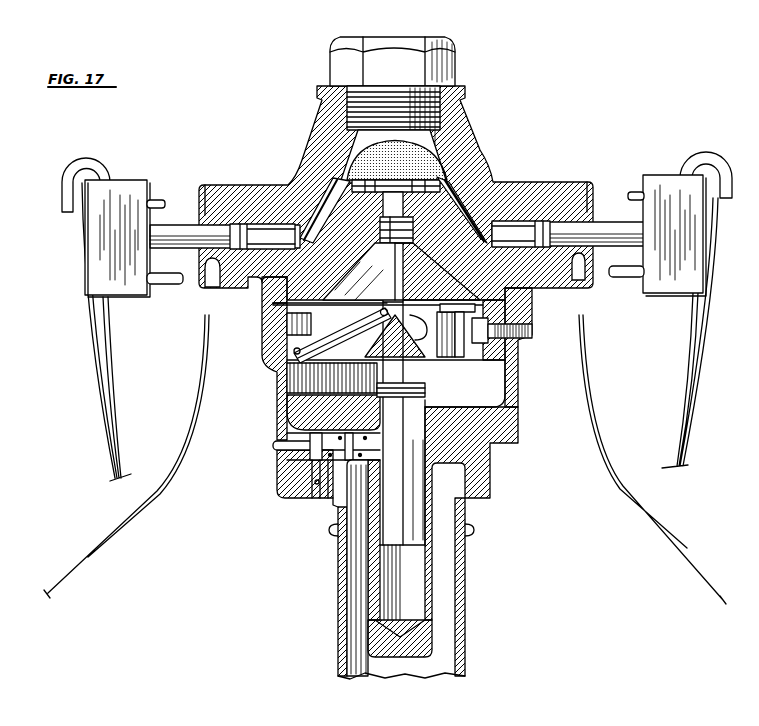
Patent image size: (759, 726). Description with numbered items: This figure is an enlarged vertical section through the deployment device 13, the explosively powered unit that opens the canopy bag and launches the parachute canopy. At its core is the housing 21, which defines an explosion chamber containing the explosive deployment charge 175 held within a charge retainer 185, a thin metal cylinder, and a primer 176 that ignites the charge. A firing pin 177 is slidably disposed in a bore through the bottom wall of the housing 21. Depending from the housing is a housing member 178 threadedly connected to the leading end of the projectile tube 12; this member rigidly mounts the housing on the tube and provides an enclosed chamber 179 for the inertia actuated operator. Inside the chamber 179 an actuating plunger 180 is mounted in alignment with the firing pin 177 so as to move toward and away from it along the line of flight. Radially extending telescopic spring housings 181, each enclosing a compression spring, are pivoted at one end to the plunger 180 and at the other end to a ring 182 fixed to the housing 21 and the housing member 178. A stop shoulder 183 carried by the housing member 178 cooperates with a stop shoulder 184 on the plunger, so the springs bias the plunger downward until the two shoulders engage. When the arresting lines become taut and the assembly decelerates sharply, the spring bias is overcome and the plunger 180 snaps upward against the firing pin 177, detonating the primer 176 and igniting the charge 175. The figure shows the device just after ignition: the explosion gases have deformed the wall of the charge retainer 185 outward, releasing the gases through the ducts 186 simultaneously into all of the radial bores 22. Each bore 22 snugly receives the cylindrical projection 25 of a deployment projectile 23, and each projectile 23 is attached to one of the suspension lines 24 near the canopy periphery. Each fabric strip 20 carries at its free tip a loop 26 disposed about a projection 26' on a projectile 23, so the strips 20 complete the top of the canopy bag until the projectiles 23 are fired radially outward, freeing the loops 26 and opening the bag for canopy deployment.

The deployment device 13 is at (477, 106).
The housing 21 is at (488, 140).
The charge retainer 185 is at (360, 142).
The explosive deployment charge 175 is at (356, 154).
The primer 176 is at (338, 165).
The ducts 186 is at (462, 193).
The bores 22 is at (522, 228).
The cylindrical projection 25 is at (172, 230).
The deployment projectiles 23 is at (123, 188).
The suspension lines 24 is at (65, 176).
The loop 26 is at (400, 332).
The projection 26' is at (398, 257).
The fabric strips 20 is at (70, 578).
The firing pin 177 is at (427, 233).
The telescopic spring housings 181 is at (320, 331).
The stop shoulder 184 is at (427, 350).
The actuating plunger 180 is at (402, 387).
The stop shoulder 183 is at (427, 400).
The ring 182 is at (515, 372).
The chamber 179 is at (498, 404).
The housing member 178 is at (522, 431).
The projectile tube 12 is at (466, 580).